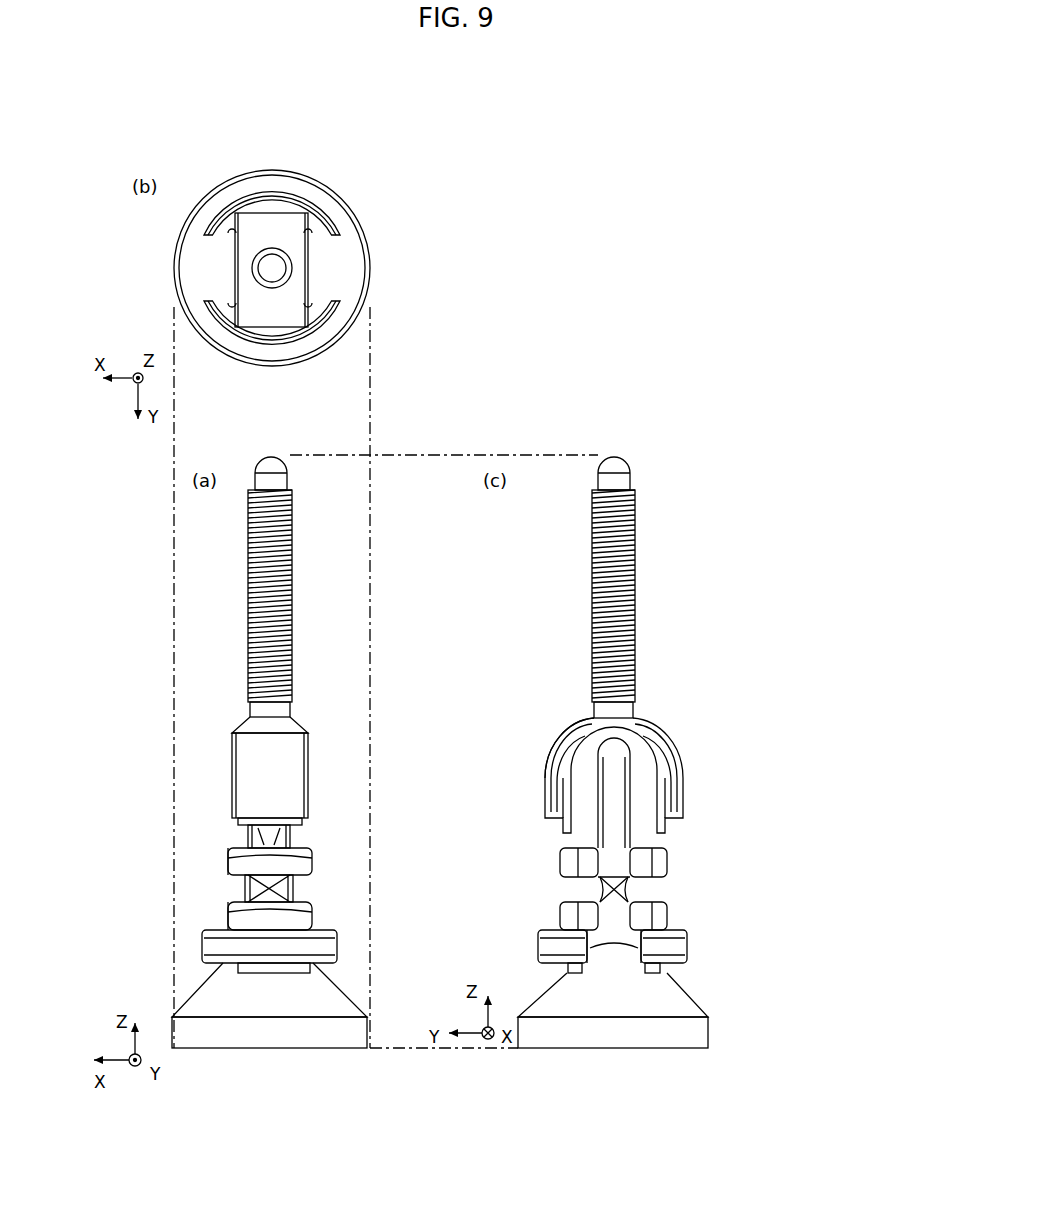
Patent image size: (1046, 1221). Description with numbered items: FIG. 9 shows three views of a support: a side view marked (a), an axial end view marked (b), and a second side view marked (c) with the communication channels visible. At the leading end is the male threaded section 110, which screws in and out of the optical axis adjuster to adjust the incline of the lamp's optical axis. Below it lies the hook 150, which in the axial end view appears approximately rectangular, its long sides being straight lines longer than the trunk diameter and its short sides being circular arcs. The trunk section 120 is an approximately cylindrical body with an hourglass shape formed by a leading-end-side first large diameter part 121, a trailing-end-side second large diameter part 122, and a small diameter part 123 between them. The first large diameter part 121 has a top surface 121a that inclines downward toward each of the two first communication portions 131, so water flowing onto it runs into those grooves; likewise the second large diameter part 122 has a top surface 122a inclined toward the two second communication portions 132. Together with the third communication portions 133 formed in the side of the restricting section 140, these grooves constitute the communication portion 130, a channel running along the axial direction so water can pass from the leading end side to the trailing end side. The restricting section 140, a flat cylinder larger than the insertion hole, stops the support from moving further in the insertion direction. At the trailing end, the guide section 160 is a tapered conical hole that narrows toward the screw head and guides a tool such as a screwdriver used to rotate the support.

The male threaded section 110 is at (264, 266).
The trunk section 120 is at (526, 882).
The first large diameter part 121 is at (300, 860).
The top surface 121a is at (236, 846).
The second large diameter part 122 is at (298, 918).
The top surface 122a is at (231, 897).
The small diameter part 123 is at (292, 892).
The communication portion 130 is at (212, 283).
The first communication portion 131 is at (617, 846).
The second communication portion 132 is at (615, 926).
The third communication portion 133 is at (613, 956).
The restricting section 140 is at (325, 220).
The hook 150 is at (253, 323).
The guide section 160 is at (345, 228).